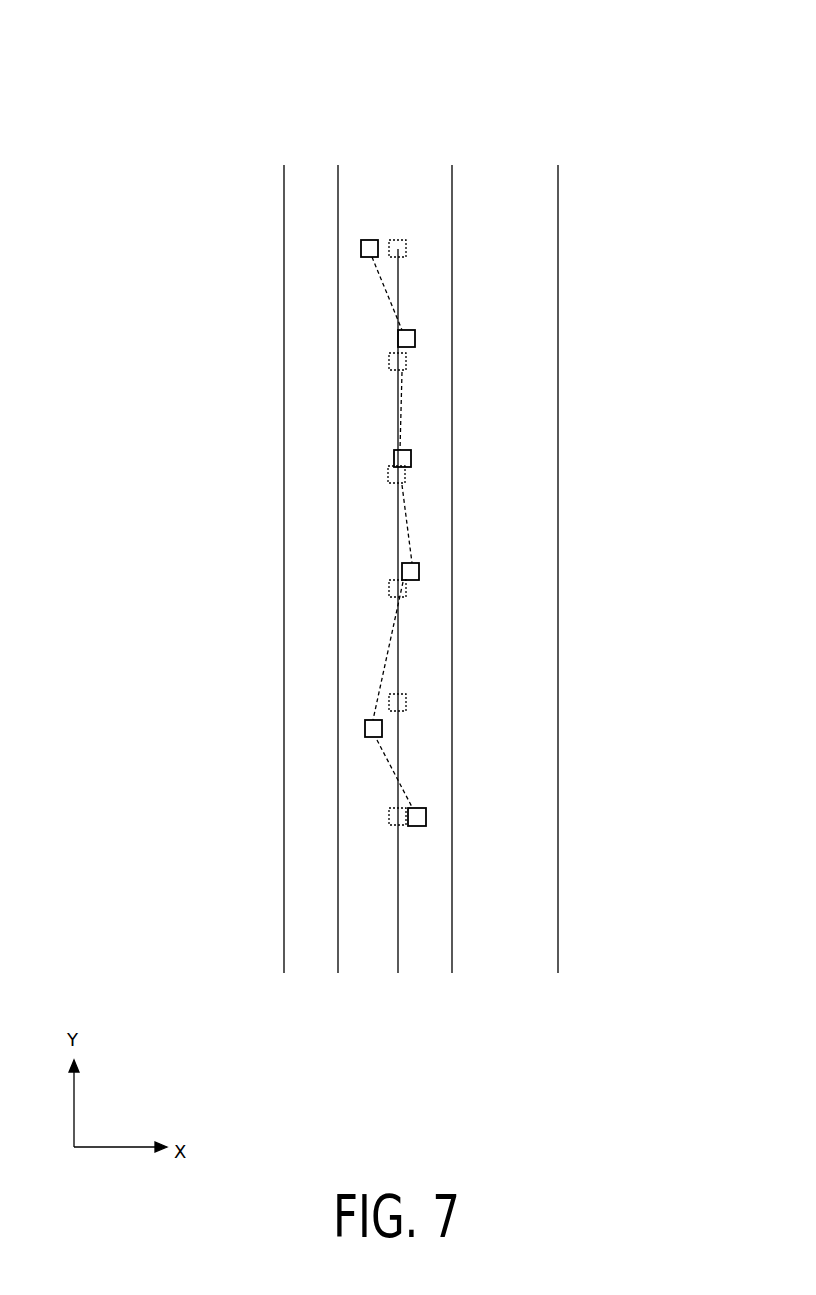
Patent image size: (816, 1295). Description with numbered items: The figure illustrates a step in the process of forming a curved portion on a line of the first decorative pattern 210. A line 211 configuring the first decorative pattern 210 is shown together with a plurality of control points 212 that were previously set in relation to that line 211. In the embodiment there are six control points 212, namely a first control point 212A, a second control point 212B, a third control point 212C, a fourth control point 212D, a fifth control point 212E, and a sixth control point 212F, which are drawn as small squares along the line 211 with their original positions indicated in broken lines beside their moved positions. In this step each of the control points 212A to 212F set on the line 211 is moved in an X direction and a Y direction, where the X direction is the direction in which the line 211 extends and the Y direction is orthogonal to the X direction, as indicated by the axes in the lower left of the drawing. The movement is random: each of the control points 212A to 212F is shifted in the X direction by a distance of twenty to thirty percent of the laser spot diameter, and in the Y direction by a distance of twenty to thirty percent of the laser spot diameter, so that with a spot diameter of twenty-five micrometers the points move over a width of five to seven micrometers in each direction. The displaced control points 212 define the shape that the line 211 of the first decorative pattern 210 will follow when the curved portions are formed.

The first decorative pattern 210 is at (402, 106).
The line 211 is at (398, 940).
The control points 212 is at (545, 529).
The first control point 212A is at (378, 241).
The second control point 212B is at (415, 339).
The third control point 212C is at (412, 459).
The fourth control point 212D is at (420, 572).
The fifth control point 212E is at (383, 729).
The sixth control point 212F is at (523, 755).